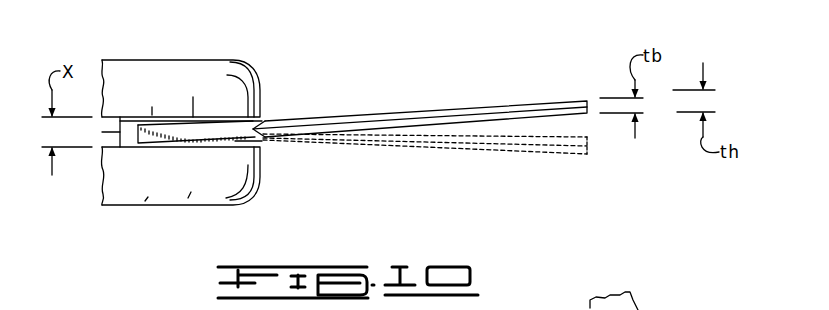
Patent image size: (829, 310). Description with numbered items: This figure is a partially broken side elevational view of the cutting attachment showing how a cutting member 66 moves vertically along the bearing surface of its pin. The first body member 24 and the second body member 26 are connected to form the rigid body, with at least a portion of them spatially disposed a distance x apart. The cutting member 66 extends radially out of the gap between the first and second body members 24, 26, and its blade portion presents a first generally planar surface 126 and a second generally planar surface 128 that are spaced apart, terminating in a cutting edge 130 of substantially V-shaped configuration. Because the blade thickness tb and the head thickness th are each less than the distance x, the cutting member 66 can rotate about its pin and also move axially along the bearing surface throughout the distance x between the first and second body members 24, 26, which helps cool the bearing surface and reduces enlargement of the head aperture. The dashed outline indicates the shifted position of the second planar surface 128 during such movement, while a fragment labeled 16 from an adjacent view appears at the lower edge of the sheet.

The first body member 24 is at (167, 59).
The second body member 26 is at (162, 207).
The cutting member 66 is at (426, 123).
The first generally planar surface 126 is at (458, 104).
The cutting edge 130 is at (541, 105).
The second generally planar surface 128 is at (583, 116).
The housing fragment 16 is at (647, 309).